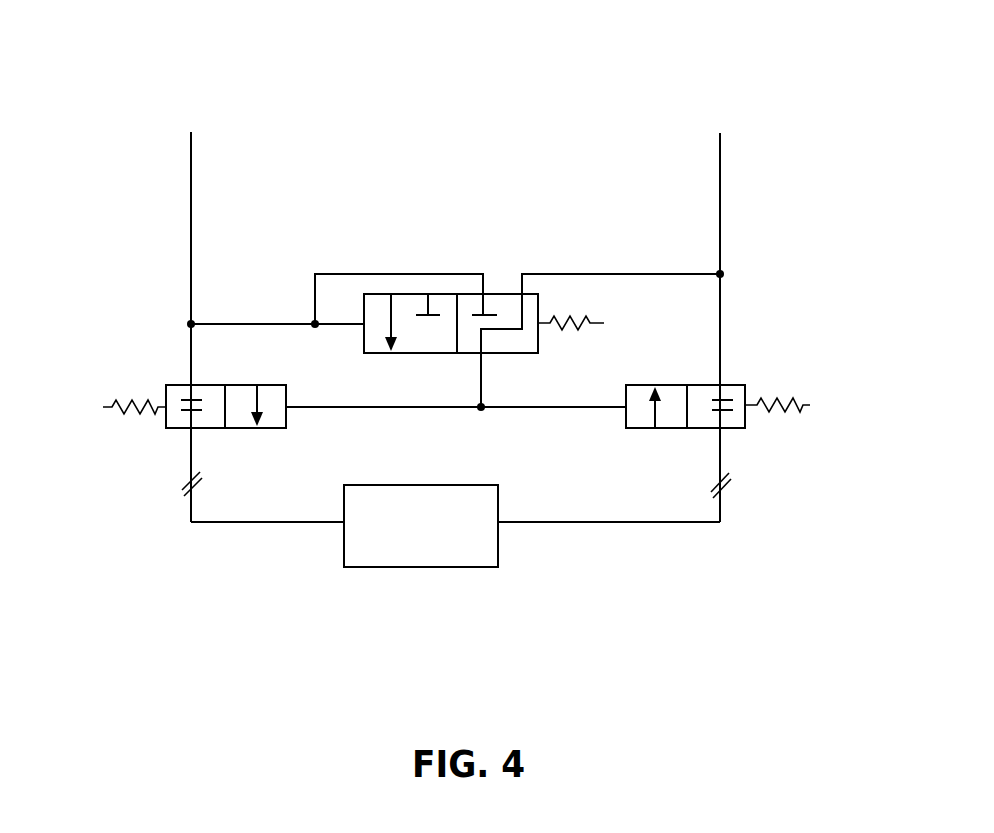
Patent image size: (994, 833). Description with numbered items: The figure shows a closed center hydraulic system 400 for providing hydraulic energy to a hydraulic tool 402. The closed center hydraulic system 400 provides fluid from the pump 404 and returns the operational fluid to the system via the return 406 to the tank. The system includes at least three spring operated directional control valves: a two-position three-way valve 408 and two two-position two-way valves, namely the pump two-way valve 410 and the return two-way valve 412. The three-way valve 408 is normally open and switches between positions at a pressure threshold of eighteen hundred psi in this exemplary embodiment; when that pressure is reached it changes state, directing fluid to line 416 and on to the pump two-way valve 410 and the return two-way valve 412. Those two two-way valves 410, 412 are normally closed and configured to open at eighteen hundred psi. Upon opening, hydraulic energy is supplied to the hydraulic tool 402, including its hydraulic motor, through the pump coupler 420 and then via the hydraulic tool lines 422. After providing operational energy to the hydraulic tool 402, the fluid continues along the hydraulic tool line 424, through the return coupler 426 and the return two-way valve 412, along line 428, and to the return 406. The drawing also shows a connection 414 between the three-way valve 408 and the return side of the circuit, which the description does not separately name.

The closed center hydraulic system 400 is at (682, 55).
The hydraulic tool 402 is at (344, 550).
The pump 404 is at (213, 87).
The return 406 is at (740, 111).
The three-way valve 408 is at (504, 267).
The pump two-way valve 410 is at (172, 384).
The return two-way valve 412 is at (742, 384).
The pilot return line 414 is at (612, 272).
The line 416 is at (368, 406).
The pump coupler 420 is at (176, 486).
The hydraulic tool lines 422 is at (228, 524).
The hydraulic tool line 424 is at (581, 524).
The return coupler 426 is at (740, 493).
The line 428 is at (722, 306).